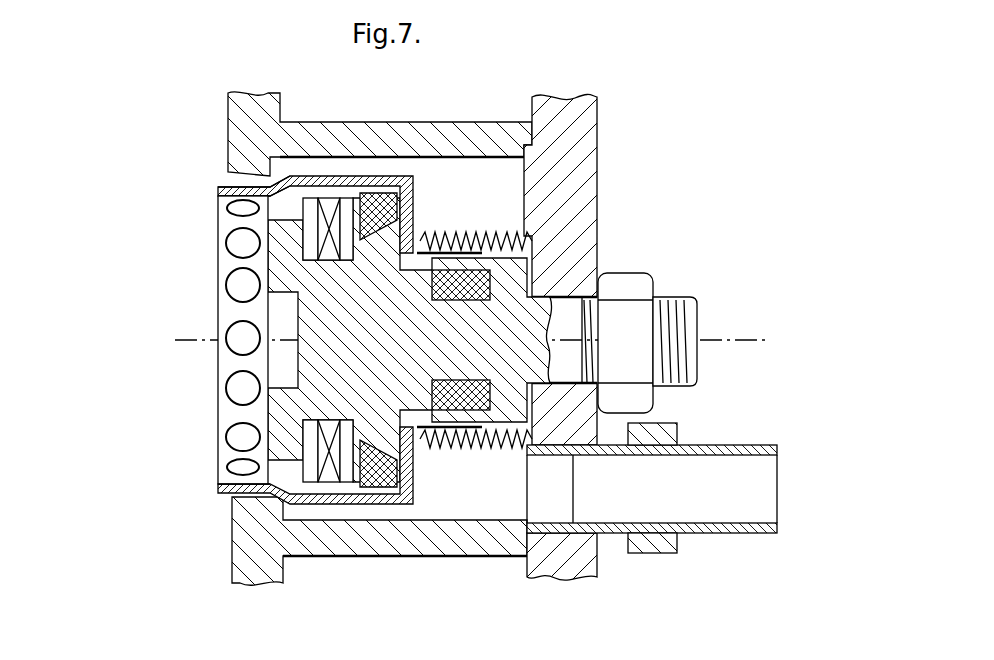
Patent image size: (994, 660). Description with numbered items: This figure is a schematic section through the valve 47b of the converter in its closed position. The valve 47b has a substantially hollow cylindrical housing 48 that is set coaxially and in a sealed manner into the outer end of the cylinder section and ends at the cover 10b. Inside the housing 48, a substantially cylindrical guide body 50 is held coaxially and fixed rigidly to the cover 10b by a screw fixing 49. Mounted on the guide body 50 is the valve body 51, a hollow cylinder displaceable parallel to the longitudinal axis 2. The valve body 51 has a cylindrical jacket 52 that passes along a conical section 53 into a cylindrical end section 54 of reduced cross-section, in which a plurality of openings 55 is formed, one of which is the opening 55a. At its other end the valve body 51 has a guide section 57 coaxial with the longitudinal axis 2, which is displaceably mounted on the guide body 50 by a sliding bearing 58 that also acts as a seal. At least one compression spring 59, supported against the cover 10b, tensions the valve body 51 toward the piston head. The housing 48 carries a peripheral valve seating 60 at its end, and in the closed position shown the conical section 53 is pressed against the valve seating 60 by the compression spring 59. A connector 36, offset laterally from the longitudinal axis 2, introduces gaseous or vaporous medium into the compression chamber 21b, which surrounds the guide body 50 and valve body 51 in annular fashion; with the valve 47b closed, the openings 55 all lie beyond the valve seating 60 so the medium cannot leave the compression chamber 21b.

The longitudinal axis 2 is at (752, 340).
The cover 10b is at (580, 138).
The compression chamber 21b is at (493, 168).
The connector 36 is at (752, 503).
The valve 47b is at (158, 140).
The housing 48 is at (328, 545).
The screw fixing 49 is at (638, 325).
The guide body 50 is at (546, 318).
The valve body 51 is at (352, 168).
The cylindrical jacket 52 is at (360, 504).
The conical section 53 is at (287, 172).
The cylindrical end section 54 is at (230, 262).
The openings 55 is at (240, 393).
The opening 55a is at (238, 488).
The guide section 57 is at (480, 446).
The sliding bearing 58 is at (457, 402).
The compression spring 59 is at (453, 232).
The valve seating 60 is at (262, 186).